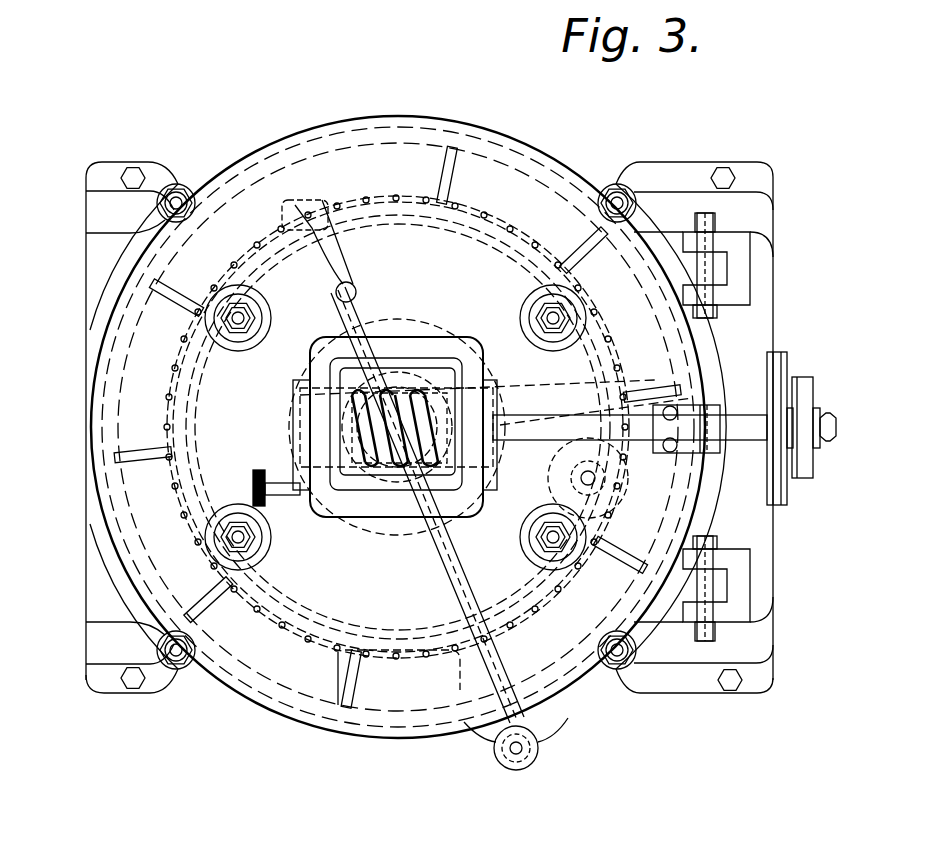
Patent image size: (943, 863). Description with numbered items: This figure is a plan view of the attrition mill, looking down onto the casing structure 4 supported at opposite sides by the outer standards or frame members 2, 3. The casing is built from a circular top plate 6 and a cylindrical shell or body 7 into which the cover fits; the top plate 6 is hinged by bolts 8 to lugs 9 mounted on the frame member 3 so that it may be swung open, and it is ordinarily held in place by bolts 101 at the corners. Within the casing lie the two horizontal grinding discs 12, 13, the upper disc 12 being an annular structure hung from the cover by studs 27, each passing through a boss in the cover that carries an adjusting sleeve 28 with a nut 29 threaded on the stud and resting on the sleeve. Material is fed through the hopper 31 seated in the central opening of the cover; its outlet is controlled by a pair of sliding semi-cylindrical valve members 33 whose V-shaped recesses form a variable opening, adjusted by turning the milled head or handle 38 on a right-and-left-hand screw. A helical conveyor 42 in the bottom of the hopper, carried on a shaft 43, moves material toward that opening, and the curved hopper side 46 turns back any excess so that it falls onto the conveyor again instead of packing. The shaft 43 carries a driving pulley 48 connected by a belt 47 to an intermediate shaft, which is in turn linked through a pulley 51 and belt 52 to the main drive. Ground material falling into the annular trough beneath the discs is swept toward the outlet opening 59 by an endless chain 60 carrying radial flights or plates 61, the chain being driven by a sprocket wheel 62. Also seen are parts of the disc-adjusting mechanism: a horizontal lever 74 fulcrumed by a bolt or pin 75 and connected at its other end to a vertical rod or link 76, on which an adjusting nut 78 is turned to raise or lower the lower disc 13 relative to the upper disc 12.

The outer standard or frame member 2 is at (102, 654).
The outer standard or frame member 3 is at (775, 645).
The casing structure 4 is at (408, 430).
The top plate 6 is at (530, 188).
The cylindrical shell or body 7 is at (490, 145).
The bolts 8 is at (708, 319).
The lugs 9 is at (740, 265).
The grinding disc 12 is at (606, 346).
The grinding disc 13 is at (608, 366).
The studs 27 is at (258, 318).
The adjusting sleeve 28 is at (575, 300).
The nut 29 is at (534, 300).
The hopper 31 is at (430, 336).
The valve members 33 is at (406, 435).
The milled head or handle 38 is at (253, 482).
The feeder or helical conveyor 42 is at (450, 418).
The shaft 43 is at (562, 428).
The hopper side 46 is at (300, 396).
The belt 47 is at (777, 502).
The driving pulley 48 is at (783, 360).
The pulley 51 is at (814, 478).
The belt 52 is at (805, 382).
The outlet opening 59 is at (340, 657).
The chain 60 is at (484, 216).
The flights or plates 61 is at (450, 172).
The sprocket wheel 62 is at (626, 485).
The lever 74 is at (360, 300).
The bolt or pin 75 is at (300, 252).
The rod or link 76 is at (540, 748).
The adjusting nut 78 is at (503, 766).
The bolts 101 is at (180, 198).